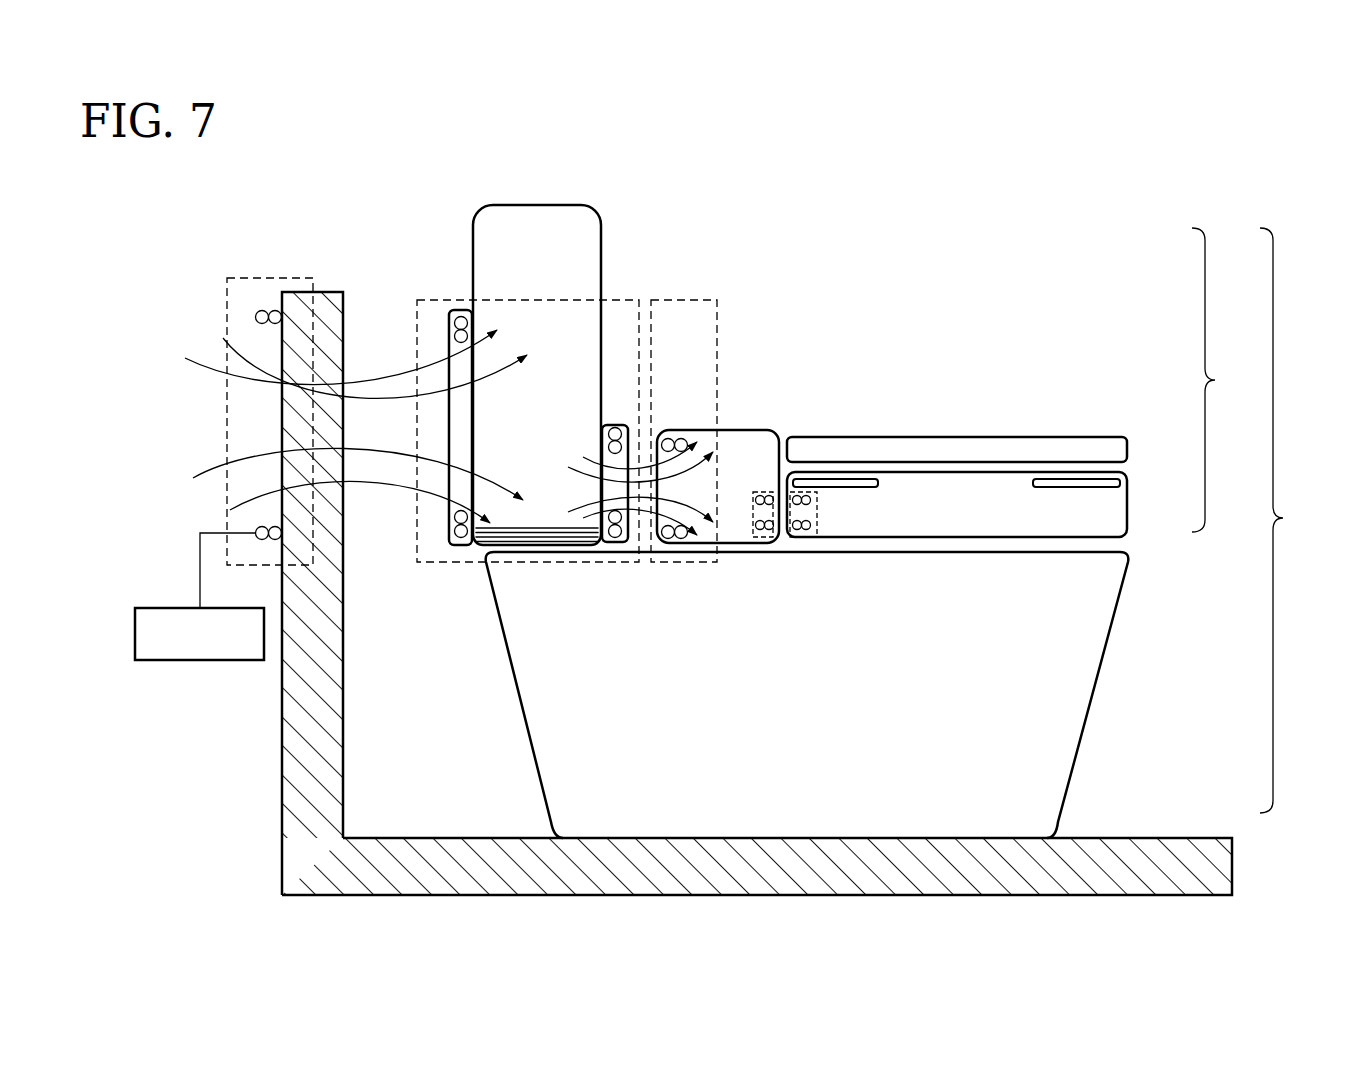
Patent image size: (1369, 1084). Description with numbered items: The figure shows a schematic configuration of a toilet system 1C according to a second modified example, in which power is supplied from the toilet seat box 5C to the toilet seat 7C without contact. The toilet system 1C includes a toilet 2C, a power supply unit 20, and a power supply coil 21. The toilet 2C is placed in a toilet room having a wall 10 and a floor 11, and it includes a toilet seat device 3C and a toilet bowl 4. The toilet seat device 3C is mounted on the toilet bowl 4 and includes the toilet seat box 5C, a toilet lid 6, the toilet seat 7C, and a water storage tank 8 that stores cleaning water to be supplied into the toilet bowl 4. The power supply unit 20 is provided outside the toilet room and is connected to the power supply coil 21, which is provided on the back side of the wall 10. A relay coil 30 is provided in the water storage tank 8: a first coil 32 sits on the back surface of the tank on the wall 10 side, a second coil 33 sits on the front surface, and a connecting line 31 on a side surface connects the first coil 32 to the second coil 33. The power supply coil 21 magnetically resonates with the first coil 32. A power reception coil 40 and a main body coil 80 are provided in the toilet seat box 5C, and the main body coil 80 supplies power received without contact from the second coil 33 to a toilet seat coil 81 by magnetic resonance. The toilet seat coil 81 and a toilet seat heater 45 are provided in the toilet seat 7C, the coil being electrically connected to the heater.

The toilet system 1C is at (1145, 175).
The toilet 2C is at (1293, 520).
The toilet seat device 3C is at (1225, 380).
The toilet bowl 4 is at (1092, 697).
The toilet seat box 5C is at (745, 430).
The toilet lid 6 is at (975, 437).
The toilet seat 7C is at (1129, 508).
The water storage tank 8 is at (540, 205).
The wall 10 is at (322, 292).
The floor 11 is at (1170, 838).
The power supply unit 20 is at (200, 660).
The power supply coil 21 is at (278, 278).
The relay coil 30 is at (618, 300).
The connecting line 31 is at (540, 527).
The first coil 32 is at (458, 310).
The second coil 33 is at (613, 425).
The power reception coil 40 is at (680, 300).
The toilet seat heater 45 is at (836, 479).
The main body coil 80 is at (765, 492).
The toilet seat coil 81 is at (817, 515).